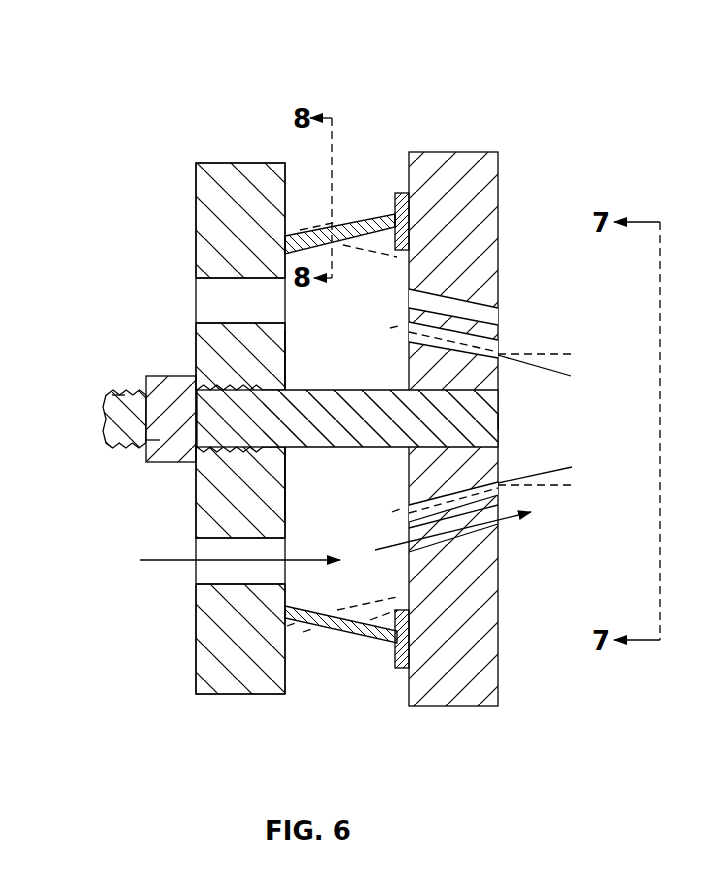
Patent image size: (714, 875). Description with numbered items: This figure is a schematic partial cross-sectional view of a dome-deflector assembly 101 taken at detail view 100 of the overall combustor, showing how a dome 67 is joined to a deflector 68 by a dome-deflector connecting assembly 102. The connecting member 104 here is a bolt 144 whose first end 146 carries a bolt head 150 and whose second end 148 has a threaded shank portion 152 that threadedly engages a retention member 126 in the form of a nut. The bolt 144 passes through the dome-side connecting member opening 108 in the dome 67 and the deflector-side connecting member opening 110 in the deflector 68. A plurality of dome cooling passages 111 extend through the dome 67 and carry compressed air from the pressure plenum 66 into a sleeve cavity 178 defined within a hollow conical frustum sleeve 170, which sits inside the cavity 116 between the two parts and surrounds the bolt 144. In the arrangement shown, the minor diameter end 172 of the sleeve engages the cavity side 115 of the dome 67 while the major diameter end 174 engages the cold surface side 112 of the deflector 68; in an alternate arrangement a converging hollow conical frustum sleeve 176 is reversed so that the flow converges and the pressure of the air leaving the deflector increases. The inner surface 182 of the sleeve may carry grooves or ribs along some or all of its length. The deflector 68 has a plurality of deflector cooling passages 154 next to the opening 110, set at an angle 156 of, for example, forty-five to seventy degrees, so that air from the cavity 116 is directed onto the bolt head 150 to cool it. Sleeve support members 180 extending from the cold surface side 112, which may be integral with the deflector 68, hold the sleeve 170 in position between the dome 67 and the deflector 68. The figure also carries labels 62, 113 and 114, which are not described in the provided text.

The detail view 100 is at (146, 80).
The dome-deflector assembly 101 is at (247, 105).
The dome 67 is at (218, 183).
The dome-deflector connecting assembly 102 is at (410, 146).
The deflector 68 is at (483, 174).
The sleeve support members 180 is at (402, 190).
The cavity 116 is at (315, 203).
The hollow conical frustum sleeve 170 is at (343, 231).
The minor diameter end 172 is at (282, 248).
The major diameter end 174 is at (412, 218).
The sleeve cavity 178 is at (381, 284).
The dome cooling passages 111 is at (233, 291).
The pressure plenum 66 is at (108, 228).
The threaded shank portion 152 is at (119, 390).
The second end 148 is at (120, 413).
The retention member 126 is at (156, 438).
The dome-side connecting member opening 108 is at (242, 448).
The inner surface 182 is at (364, 264).
The deflector cooling passages 154 is at (405, 295).
The connecting member 104 is at (322, 384).
The first end 146 is at (466, 424).
The bolt head 150 is at (503, 425).
The angle 156 is at (554, 376).
The second side 62 is at (642, 357).
The bolt 144 is at (337, 448).
The deflector-side connecting member opening 110 is at (416, 454).
The lower end of first body 113 is at (196, 650).
The cavity side 115 is at (298, 676).
The converging hollow conical frustum sleeve 176 is at (306, 639).
The cold surface side 112 is at (407, 697).
The lower end of second body 114 is at (500, 677).